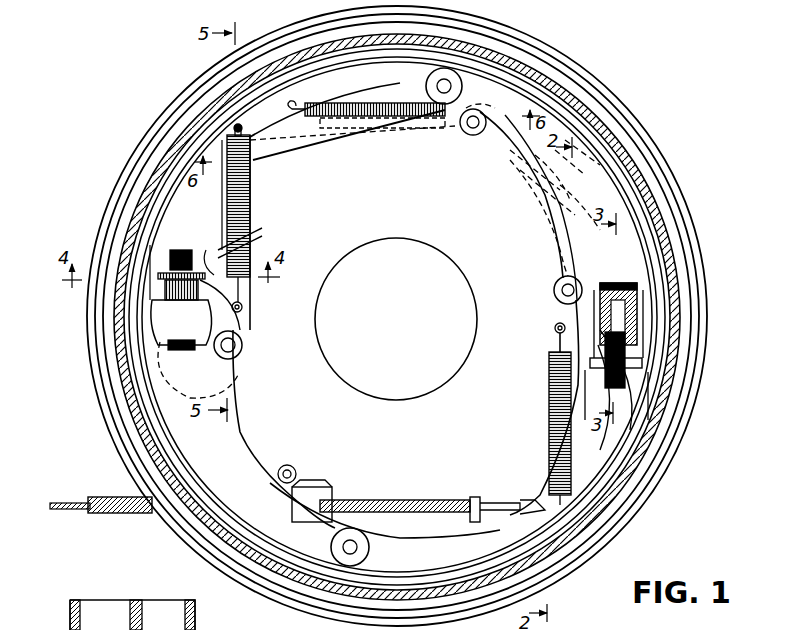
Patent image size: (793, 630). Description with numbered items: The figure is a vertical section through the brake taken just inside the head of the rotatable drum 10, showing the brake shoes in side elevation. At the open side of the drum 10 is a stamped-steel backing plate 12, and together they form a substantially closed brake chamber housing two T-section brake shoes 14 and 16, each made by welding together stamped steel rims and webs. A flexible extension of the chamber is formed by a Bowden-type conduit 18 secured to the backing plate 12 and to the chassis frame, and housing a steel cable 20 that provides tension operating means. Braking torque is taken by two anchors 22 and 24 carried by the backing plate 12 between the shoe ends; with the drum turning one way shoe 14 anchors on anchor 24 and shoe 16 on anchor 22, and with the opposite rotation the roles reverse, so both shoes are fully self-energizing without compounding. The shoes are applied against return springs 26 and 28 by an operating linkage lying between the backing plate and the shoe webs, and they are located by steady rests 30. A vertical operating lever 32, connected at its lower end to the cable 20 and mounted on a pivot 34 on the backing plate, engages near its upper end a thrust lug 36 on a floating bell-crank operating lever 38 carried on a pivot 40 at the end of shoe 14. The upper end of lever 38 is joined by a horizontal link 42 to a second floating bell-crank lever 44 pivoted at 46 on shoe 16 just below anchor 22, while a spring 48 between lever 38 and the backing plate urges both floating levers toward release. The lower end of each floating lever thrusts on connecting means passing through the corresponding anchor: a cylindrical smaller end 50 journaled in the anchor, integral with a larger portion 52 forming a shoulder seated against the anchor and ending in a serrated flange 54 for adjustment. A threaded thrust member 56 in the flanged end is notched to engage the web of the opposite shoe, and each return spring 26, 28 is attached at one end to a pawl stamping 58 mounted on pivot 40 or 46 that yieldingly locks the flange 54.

The rotatable drum 10 is at (588, 118).
The backing plate 12 is at (262, 452).
The brake shoe 14 is at (380, 92).
The brake shoe 16 is at (405, 550).
The Bowden-type conduit 18 is at (105, 514).
The steel cable 20 is at (372, 503).
The anchor 22 is at (150, 320).
The anchor 24 is at (645, 320).
The return spring 26 is at (252, 210).
The return spring 28 is at (548, 408).
The steady rest 30 is at (455, 73).
The operating lever 32 is at (548, 353).
The pivot 34 is at (560, 280).
The thrust lug 36 is at (520, 165).
The floating bell-crank operating lever 38 is at (600, 160).
The pivot 40 is at (558, 288).
The horizontal link 42 is at (425, 132).
The second floating bell-crank lever 44 is at (252, 245).
The pivot 46 is at (244, 345).
The spring 48 is at (330, 118).
The cylindrical smaller end 50 is at (170, 346).
The larger portion 52 is at (168, 290).
The serrated flange 54 is at (160, 276).
The threaded thrust member 56 is at (172, 262).
The pawl stamping 58 is at (248, 306).